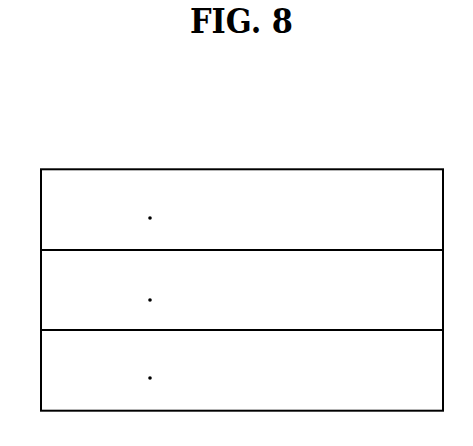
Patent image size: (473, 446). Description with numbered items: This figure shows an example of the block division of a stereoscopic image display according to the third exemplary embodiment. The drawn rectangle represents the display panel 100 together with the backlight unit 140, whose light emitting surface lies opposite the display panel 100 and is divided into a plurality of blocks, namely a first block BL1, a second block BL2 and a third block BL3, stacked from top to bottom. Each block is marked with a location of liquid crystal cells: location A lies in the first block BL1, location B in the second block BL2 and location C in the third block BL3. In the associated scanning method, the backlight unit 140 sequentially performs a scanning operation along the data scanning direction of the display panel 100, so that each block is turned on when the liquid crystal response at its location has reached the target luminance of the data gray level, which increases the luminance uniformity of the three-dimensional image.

The display panel 100 is at (242, 257).
The backlight unit 140 is at (357, 169).
The first block BL1 is at (268, 221).
The second block BL2 is at (268, 302).
The third block BL3 is at (268, 381).